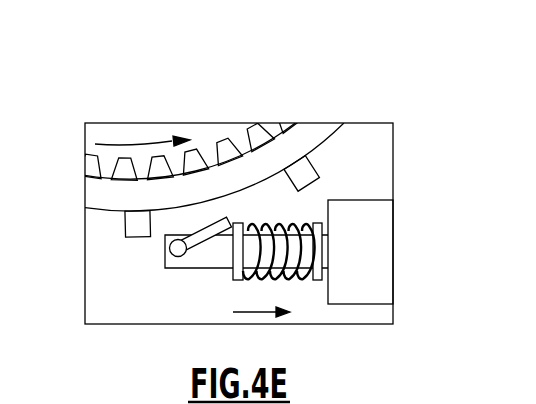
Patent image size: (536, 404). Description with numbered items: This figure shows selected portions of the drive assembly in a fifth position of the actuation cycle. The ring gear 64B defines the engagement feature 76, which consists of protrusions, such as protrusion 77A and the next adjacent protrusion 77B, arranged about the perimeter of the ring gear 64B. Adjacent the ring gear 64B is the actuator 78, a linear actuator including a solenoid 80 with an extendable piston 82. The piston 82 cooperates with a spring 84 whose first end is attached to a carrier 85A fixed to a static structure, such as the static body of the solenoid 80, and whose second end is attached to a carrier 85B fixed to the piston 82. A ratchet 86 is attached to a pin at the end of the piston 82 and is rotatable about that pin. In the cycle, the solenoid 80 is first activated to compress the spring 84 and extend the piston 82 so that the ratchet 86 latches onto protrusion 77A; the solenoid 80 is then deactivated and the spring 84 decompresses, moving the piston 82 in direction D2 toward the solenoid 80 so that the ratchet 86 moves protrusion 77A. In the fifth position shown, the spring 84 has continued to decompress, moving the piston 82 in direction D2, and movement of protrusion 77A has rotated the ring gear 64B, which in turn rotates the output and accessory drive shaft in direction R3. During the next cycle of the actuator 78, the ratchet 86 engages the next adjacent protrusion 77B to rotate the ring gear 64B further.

The ring gear 64B is at (307, 137).
The engagement feature 76 is at (66, 217).
The protrusion 77A is at (312, 177).
The protrusion 77B is at (125, 238).
The actuator 78 is at (376, 145).
The solenoid 80 is at (367, 234).
The piston 82 is at (203, 268).
The spring 84 is at (290, 282).
The carrier 85A is at (233, 279).
The carrier 85B is at (318, 282).
The ratchet 86 is at (215, 217).
The direction of rotation of the output R3 is at (140, 142).
The direction of piston movement toward the solenoid D2 is at (260, 312).